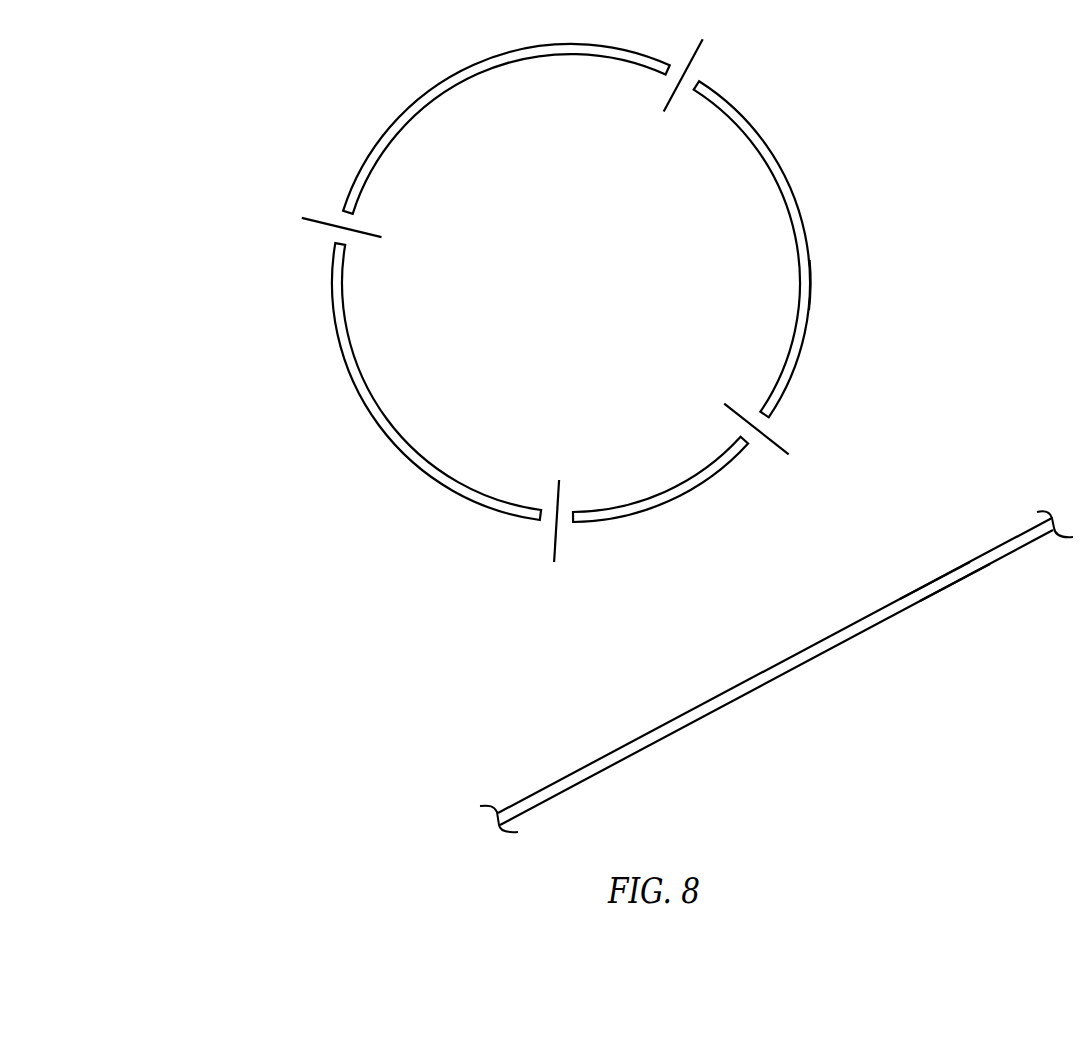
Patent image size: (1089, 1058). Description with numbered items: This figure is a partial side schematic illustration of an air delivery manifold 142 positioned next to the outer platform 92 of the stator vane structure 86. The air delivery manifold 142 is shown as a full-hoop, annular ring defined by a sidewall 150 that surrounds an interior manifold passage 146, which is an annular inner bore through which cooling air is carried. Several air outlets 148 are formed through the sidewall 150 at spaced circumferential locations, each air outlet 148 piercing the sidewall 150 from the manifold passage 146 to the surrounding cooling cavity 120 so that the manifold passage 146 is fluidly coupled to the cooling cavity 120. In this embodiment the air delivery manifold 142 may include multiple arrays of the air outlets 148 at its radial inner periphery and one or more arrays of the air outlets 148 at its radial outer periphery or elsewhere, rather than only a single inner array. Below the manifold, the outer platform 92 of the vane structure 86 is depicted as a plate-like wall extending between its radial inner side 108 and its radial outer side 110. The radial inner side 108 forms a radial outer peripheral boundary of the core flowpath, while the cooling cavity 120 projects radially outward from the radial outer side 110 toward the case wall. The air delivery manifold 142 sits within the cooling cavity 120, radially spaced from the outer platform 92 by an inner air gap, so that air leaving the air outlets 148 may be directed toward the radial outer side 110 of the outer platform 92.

The air delivery manifold 142 is at (800, 170).
The manifold passage 146 is at (590, 302).
The air outlets 148 is at (690, 84).
The sidewall 150 is at (809, 285).
The cooling cavity 120 is at (891, 443).
The vane structure 86 is at (1014, 535).
The outer platform 92 is at (1014, 535).
The radial outer side 110 is at (935, 581).
The radial inner side 108 is at (958, 581).